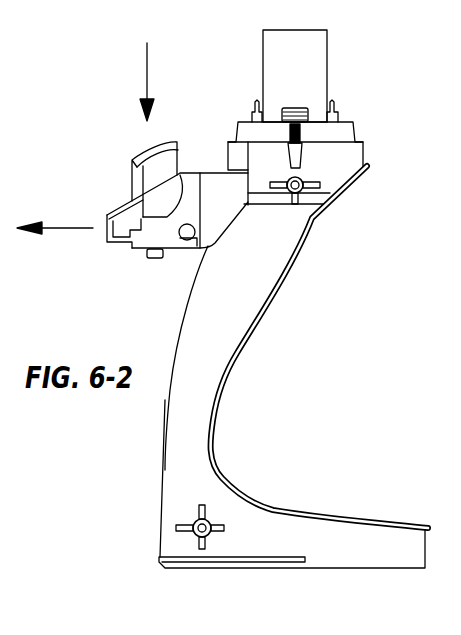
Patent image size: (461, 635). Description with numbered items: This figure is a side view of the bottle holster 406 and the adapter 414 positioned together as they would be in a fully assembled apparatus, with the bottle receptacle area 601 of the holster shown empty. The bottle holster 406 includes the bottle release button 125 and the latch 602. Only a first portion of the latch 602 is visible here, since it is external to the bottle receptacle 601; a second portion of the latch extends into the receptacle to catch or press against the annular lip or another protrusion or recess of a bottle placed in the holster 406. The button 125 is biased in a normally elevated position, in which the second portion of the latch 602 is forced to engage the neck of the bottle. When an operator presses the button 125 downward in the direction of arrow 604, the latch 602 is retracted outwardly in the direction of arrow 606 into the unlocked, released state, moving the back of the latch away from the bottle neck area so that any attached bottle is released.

The bottle receptacle area 601 is at (299, 392).
The bottle holster 406 is at (188, 313).
The latch 602 is at (104, 222).
The bottle release button 125 is at (148, 158).
The adapter 414 is at (327, 72).
The arrow 604 is at (147, 72).
The arrow 606 is at (50, 229).